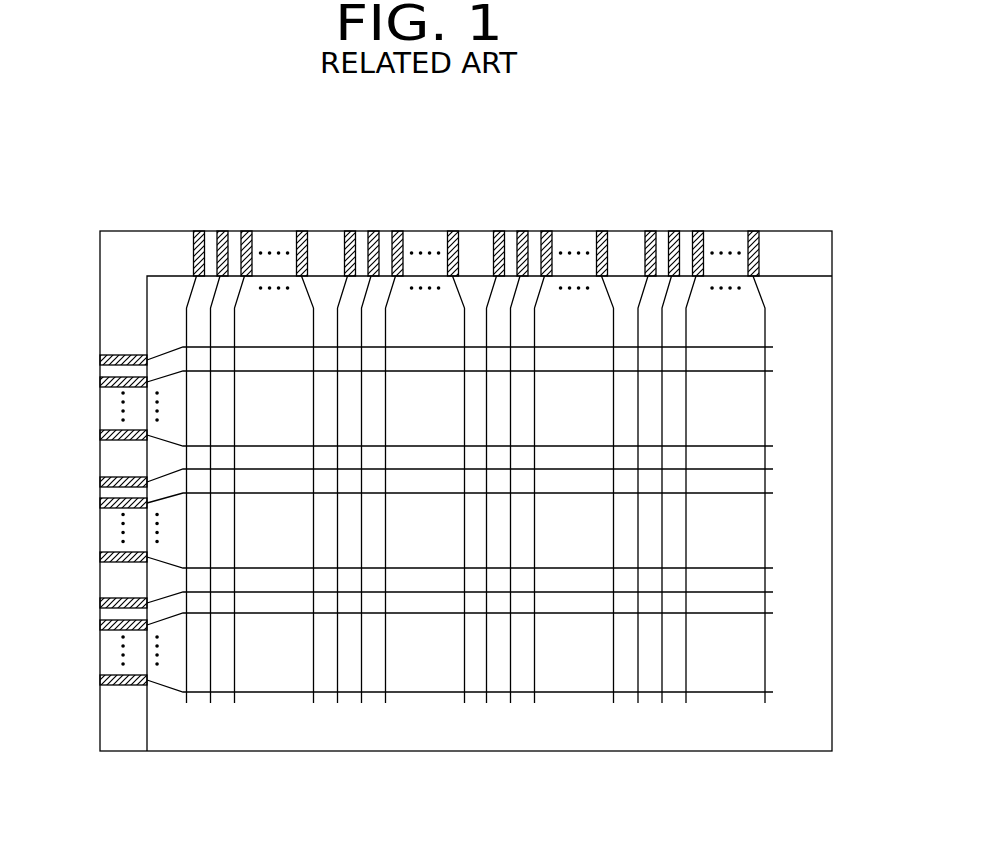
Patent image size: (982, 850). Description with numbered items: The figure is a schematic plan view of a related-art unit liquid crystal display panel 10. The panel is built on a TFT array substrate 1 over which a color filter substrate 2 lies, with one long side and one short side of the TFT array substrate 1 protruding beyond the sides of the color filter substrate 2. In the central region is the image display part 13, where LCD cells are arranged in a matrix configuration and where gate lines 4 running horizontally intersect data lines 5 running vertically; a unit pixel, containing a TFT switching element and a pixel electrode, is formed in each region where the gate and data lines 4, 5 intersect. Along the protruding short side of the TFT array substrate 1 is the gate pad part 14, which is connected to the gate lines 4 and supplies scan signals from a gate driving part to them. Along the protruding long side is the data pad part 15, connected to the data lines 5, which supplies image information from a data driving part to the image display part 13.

The liquid crystal display panel 10 is at (130, 216).
The TFT array substrate 1 is at (820, 256).
The color filter substrate 2 is at (820, 318).
The gate lines 4 is at (731, 373).
The data lines 5 is at (533, 663).
The image display part 13 is at (443, 422).
The gate pad part 14 is at (90, 682).
The data pad part 15 is at (765, 216).